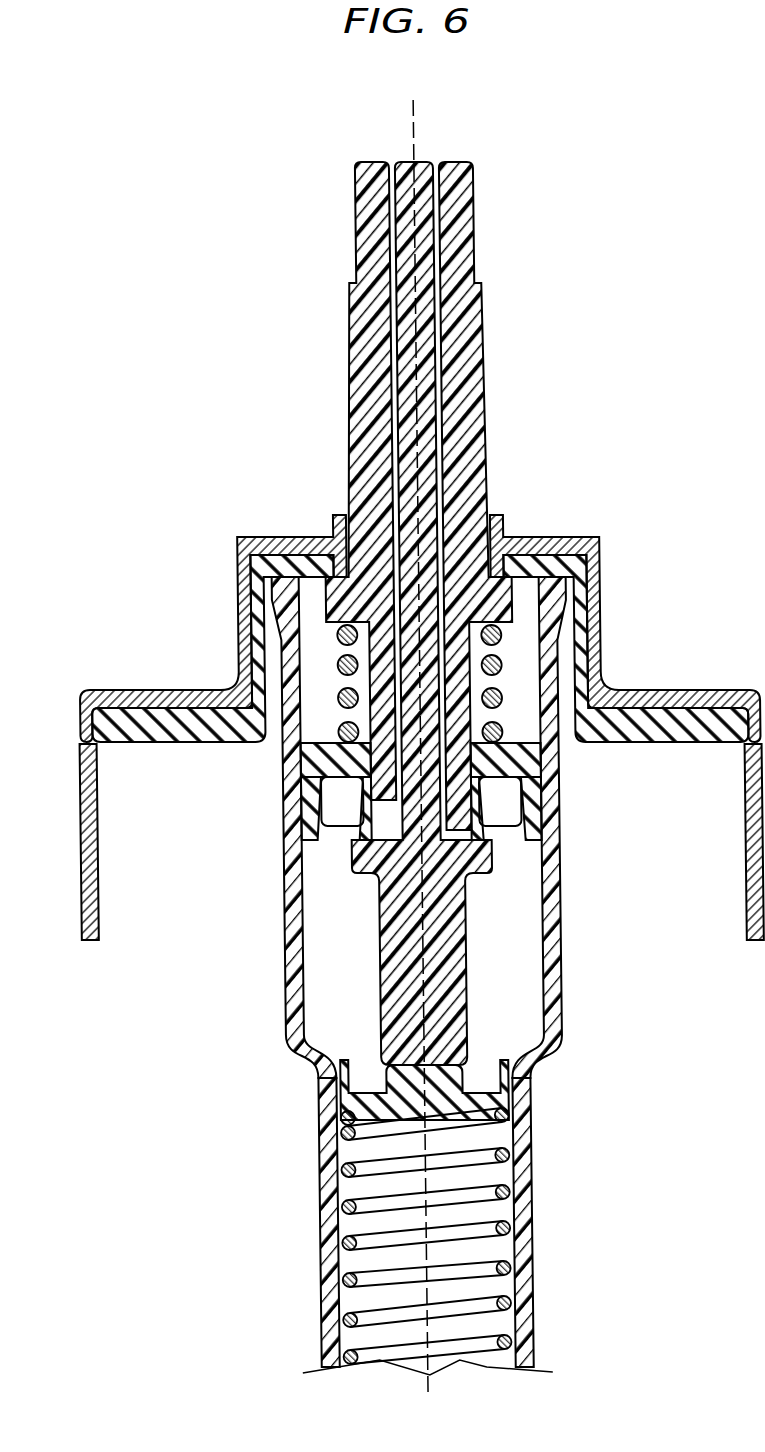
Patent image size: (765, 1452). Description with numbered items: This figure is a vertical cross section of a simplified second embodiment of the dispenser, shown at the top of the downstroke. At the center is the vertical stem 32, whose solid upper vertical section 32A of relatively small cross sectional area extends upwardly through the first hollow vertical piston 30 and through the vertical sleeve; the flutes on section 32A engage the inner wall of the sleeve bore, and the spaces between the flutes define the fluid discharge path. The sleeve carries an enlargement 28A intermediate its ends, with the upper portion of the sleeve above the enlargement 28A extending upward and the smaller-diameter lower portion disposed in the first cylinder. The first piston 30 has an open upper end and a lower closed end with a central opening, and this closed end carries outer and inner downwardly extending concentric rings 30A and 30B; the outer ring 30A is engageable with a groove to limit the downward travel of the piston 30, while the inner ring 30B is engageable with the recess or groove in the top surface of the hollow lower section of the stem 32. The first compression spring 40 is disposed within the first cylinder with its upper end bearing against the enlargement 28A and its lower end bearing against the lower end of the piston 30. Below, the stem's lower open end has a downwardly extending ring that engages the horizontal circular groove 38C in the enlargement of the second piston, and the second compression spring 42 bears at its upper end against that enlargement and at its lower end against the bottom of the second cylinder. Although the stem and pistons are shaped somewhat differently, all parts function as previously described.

The enlargement 28A is at (600, 575).
The first hollow vertical piston 30 is at (548, 765).
The outer downwardly extending concentric ring 30A is at (535, 827).
The inner downwardly extending concentric ring 30B is at (367, 818).
The vertical stem 32 is at (520, 1116).
The solid upper vertical section 32A is at (430, 325).
The horizontal circular groove 38C is at (513, 1062).
The first compression spring 40 is at (340, 652).
The second compression spring 42 is at (533, 1232).